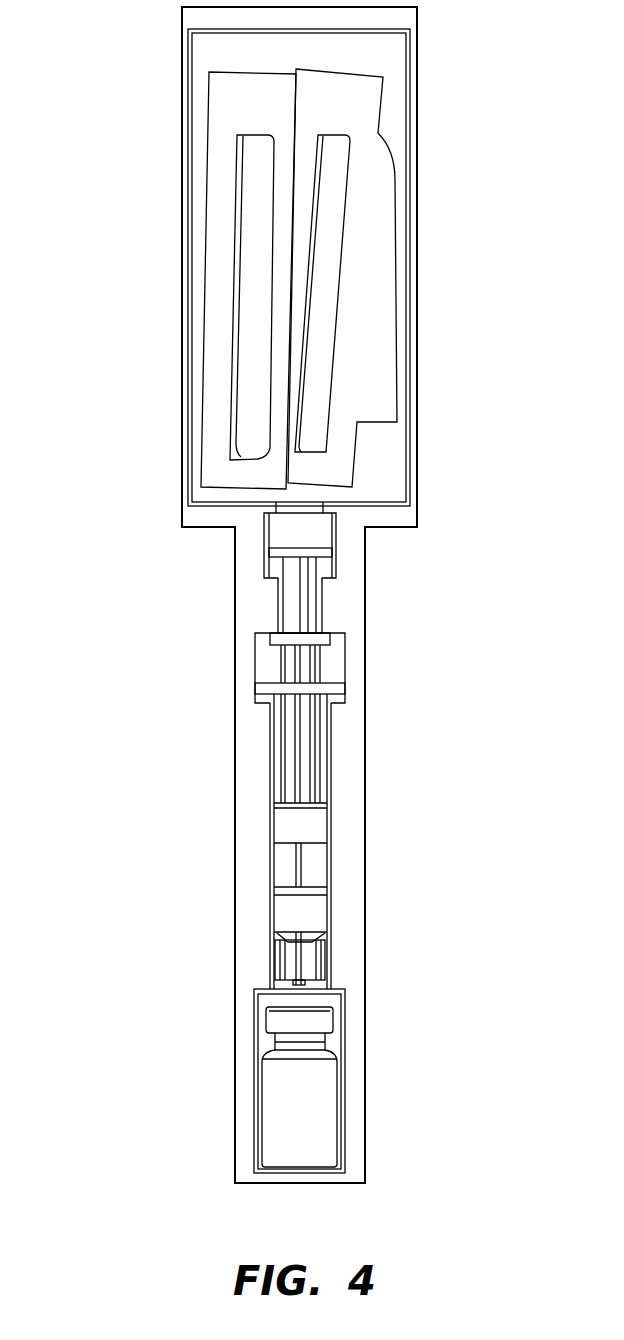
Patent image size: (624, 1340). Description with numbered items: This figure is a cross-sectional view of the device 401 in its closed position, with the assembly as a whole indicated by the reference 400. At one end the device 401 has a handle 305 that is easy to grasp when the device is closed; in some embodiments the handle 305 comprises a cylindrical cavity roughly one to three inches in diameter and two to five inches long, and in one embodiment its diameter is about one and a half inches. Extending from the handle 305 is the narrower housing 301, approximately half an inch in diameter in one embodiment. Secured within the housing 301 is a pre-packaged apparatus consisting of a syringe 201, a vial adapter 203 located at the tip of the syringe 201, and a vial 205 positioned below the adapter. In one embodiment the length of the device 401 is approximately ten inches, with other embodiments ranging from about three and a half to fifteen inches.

The drug delivery kit assembly 400 is at (548, 85).
The device 401 is at (116, 6).
The handle 305 is at (417, 206).
The syringe 201 is at (347, 754).
The vial adapter 203 is at (322, 950).
The housing 301 is at (338, 967).
The vial 205 is at (309, 1118).